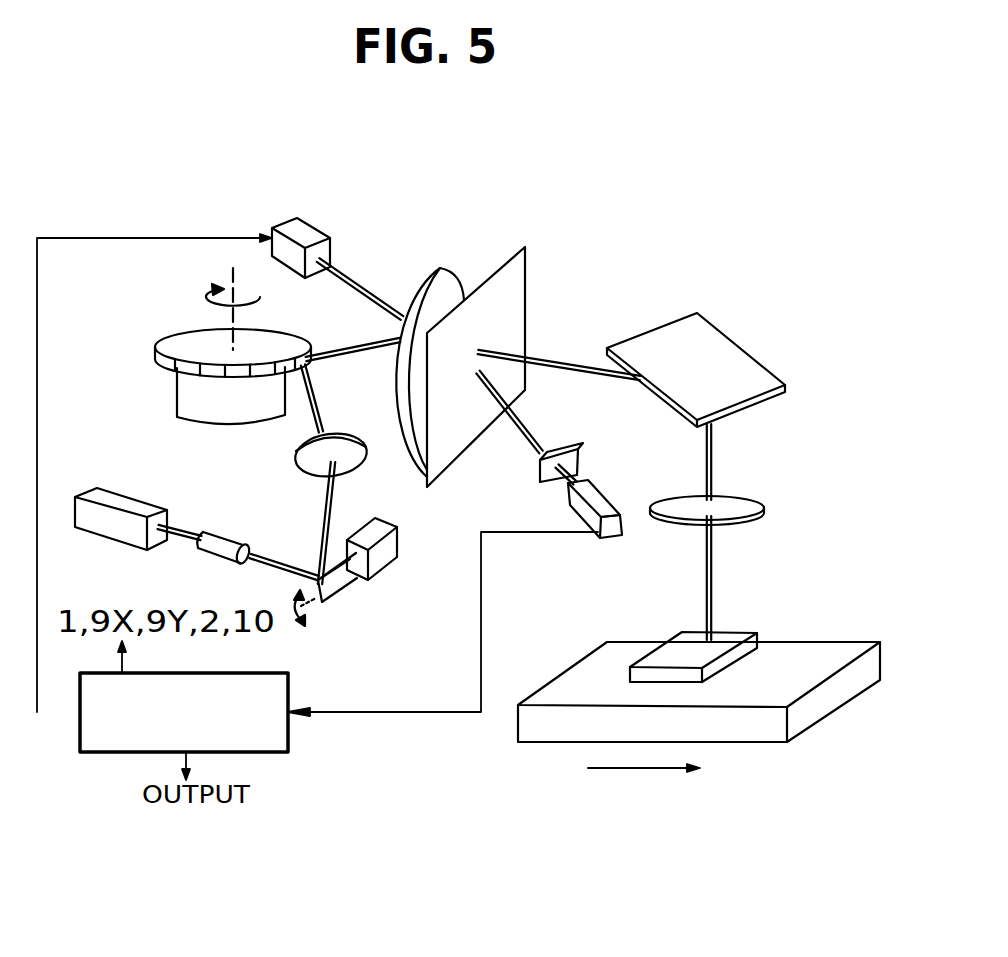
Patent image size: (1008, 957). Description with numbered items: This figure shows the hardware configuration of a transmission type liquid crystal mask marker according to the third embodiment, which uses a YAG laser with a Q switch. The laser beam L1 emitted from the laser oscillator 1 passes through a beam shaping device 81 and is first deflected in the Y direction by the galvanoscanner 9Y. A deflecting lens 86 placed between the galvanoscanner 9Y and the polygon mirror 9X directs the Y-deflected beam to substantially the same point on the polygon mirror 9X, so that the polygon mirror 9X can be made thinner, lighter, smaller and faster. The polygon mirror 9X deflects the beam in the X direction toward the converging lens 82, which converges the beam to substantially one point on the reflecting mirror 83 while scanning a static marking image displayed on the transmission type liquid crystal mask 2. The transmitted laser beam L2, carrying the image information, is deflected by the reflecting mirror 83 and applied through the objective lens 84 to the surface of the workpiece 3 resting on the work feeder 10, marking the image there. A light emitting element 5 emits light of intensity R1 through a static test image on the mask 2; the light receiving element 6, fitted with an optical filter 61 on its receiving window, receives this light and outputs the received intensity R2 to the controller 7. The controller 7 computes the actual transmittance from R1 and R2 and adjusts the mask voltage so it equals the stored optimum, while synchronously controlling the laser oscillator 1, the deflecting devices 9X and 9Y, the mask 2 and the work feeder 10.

The laser oscillator 1 is at (92, 490).
The transmission type liquid crystal mask 2 is at (528, 266).
The workpiece 3 is at (737, 630).
The light emitting element 5 is at (311, 222).
The light receiving element 6 is at (603, 490).
The controller 7 is at (292, 682).
The work feeder 10 is at (826, 640).
The optical filter 61 is at (538, 470).
The beam shaping device 81 is at (236, 541).
The converging lens 82 is at (425, 268).
The reflecting mirror 83 is at (730, 338).
The objective lens 84 is at (755, 500).
The deflecting lens 86 is at (348, 434).
The polygon mirror 9X is at (222, 432).
The galvanoscanner 9Y is at (391, 549).
The intensity of the emitted light R1 is at (352, 279).
The intensity of the received light R2 is at (541, 434).
The laser beam L1 is at (343, 352).
The transmitted laser beam L2 is at (557, 358).